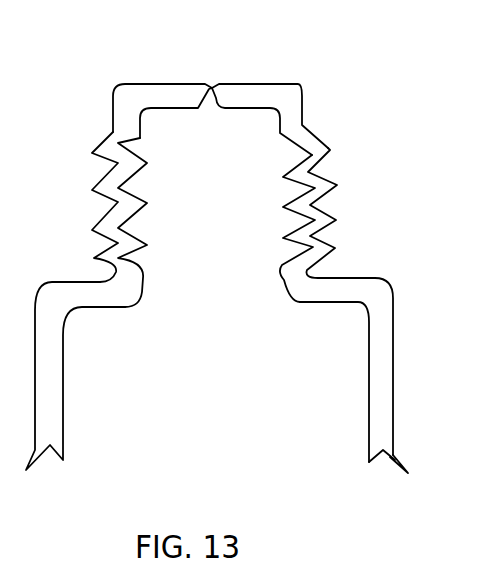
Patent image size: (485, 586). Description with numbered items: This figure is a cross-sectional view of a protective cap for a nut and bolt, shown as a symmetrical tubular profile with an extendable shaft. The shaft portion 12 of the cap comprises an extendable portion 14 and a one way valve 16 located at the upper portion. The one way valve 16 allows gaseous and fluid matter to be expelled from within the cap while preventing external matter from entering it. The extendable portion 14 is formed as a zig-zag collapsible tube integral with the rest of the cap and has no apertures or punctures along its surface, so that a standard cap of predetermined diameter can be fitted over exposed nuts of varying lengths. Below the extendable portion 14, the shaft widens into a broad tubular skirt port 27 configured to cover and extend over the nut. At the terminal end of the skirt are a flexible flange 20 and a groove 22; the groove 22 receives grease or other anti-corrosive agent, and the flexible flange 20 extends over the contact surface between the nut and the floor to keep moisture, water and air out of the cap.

The shaft portion 12 is at (95, 137).
The extendable portion 14 is at (333, 180).
The one way valve 16 is at (213, 80).
The flexible flange 20 is at (402, 453).
The groove 22 is at (382, 456).
The tubular skirt port 27 is at (393, 350).